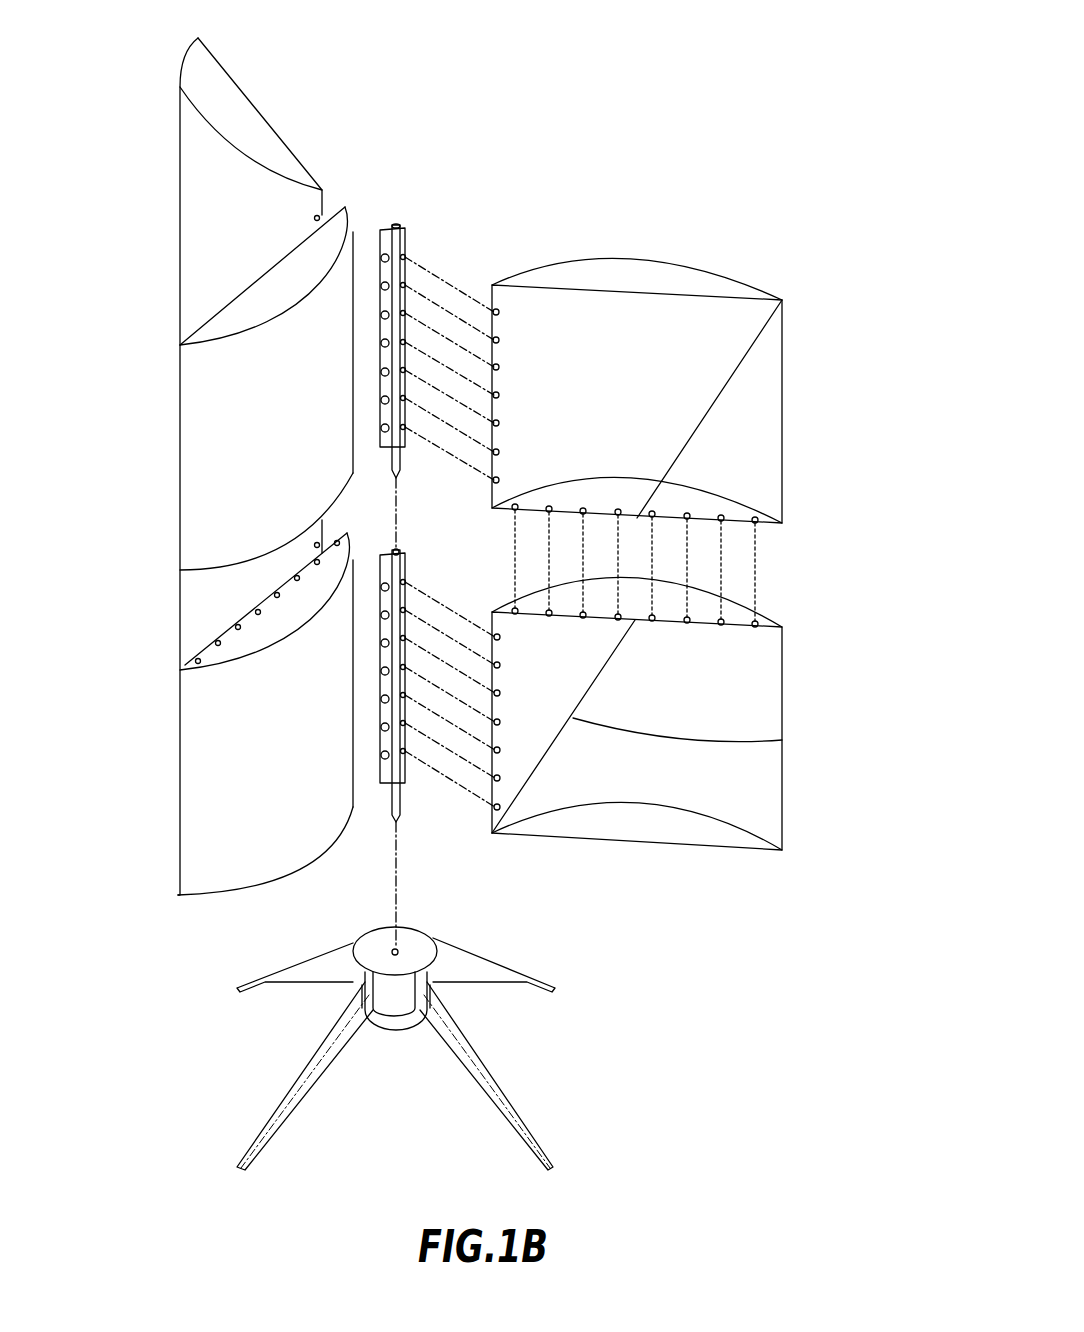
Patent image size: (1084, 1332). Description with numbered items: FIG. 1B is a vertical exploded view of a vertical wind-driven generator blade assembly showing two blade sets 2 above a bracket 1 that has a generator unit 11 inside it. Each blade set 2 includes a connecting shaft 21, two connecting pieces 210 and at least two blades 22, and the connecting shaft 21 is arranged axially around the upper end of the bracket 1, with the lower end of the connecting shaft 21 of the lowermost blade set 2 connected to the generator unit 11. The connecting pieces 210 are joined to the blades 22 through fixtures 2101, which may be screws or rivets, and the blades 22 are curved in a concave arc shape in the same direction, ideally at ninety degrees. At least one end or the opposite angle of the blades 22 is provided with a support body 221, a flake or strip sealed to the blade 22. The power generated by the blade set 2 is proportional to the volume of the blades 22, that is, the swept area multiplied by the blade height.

The bracket 1 is at (233, 1130).
The generator unit 11 is at (398, 998).
The blade set 2 is at (434, 128).
The connecting shaft 21 is at (397, 232).
The connecting piece 210 is at (402, 238).
The fixture 2101 is at (407, 257).
The blade 22 is at (203, 247).
The support body 221 is at (257, 142).